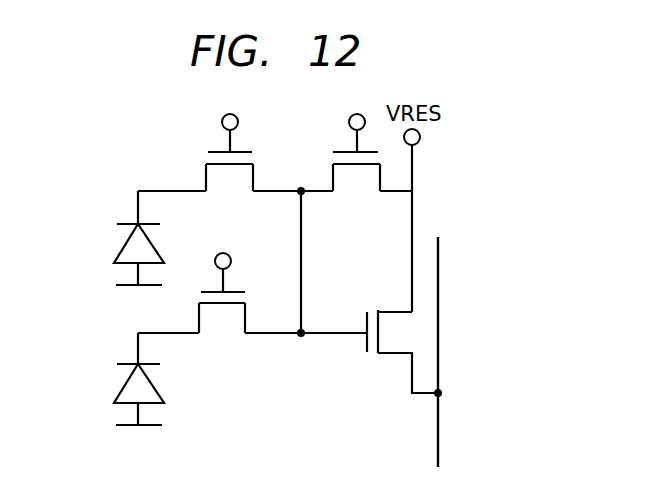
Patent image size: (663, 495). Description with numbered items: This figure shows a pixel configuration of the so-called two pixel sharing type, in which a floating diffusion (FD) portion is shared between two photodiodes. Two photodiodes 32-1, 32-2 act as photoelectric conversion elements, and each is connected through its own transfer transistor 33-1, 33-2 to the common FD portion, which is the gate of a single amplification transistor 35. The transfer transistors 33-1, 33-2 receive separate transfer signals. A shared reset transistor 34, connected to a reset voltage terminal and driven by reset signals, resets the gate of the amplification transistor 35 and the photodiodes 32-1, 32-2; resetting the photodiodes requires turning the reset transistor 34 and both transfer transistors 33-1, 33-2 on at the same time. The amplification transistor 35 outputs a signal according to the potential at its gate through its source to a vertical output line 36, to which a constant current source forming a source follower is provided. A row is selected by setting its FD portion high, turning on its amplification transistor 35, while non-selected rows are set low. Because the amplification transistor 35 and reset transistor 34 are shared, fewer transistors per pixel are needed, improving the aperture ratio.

The photodiode 32-1 is at (118, 243).
The photodiode 32-2 is at (118, 385).
The transfer transistor 33-1 is at (212, 147).
The transfer transistor 33-2 is at (237, 288).
The reset transistor 34 is at (340, 147).
The amplification transistor 35 is at (372, 305).
The vertical output line 36 is at (440, 267).